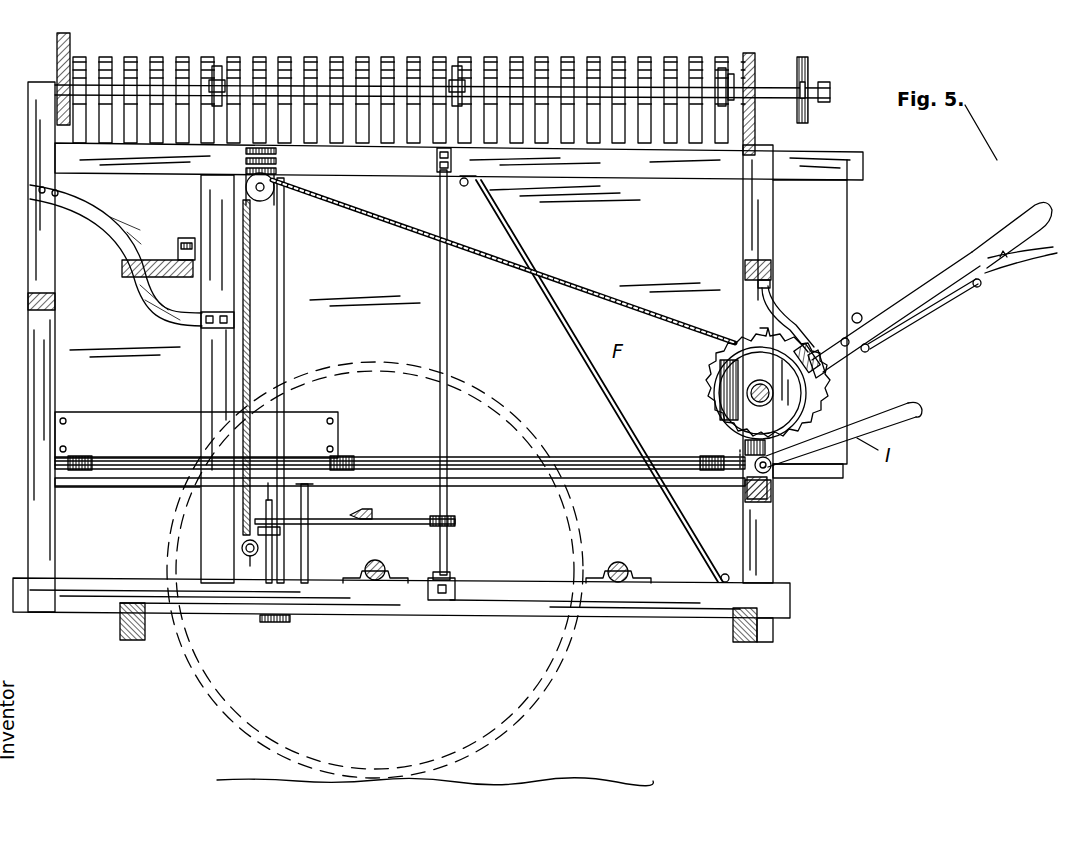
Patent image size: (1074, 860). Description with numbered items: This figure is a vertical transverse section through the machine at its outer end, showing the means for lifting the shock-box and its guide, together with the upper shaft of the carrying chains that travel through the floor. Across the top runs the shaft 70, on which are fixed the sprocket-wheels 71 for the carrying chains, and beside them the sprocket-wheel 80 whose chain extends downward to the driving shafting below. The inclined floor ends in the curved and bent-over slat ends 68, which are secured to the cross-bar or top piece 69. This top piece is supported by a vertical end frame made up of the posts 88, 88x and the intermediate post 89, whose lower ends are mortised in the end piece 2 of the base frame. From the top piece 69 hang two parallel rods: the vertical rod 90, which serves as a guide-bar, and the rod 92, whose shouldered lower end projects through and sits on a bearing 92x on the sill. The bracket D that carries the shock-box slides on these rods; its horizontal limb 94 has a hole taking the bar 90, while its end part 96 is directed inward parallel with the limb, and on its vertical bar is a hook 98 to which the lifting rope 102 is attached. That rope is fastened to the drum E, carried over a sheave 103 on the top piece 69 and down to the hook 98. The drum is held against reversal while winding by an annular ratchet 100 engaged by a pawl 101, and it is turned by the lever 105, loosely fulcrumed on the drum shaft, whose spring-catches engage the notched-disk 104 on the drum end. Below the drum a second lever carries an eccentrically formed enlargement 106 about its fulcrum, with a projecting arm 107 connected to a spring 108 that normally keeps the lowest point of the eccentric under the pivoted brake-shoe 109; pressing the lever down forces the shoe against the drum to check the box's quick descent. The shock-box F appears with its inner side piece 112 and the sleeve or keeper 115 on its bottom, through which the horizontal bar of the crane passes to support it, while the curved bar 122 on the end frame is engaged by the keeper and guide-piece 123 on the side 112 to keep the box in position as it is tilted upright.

The end piece 2 is at (626, 601).
The curved ends of the metal slats 68 is at (409, 87).
The cross-bar or top piece 69 is at (796, 166).
The shaft 70 is at (732, 60).
The sprocket-wheels 71 is at (218, 68).
The sprocket-wheel 80 is at (818, 90).
The vertical post 88 is at (772, 548).
The vertical post 88x is at (183, 347).
The intermediate post 89 is at (766, 238).
The vertical rod 90 is at (449, 348).
The rod 92 is at (285, 292).
The bearing 92x is at (285, 622).
The horizontal limb 94 is at (355, 513).
The end part 96 is at (282, 556).
The hook 98 is at (246, 540).
The annular ratchet 100 is at (700, 380).
The pawl 101 is at (797, 316).
The rope 102 is at (592, 294).
The sheave 103 is at (268, 196).
The notched-disk 104 is at (820, 404).
The lever 105 is at (925, 287).
The eccentrically formed enlargement 106 is at (780, 476).
The arm 107 is at (742, 462).
The spring 108 is at (738, 498).
The brake-shoe 109 is at (771, 402).
The inner side piece 112 is at (395, 271).
The sleeve or keeper 115 is at (308, 494).
The curved bar 122 is at (121, 240).
The keeper and guide-piece 123 is at (138, 272).